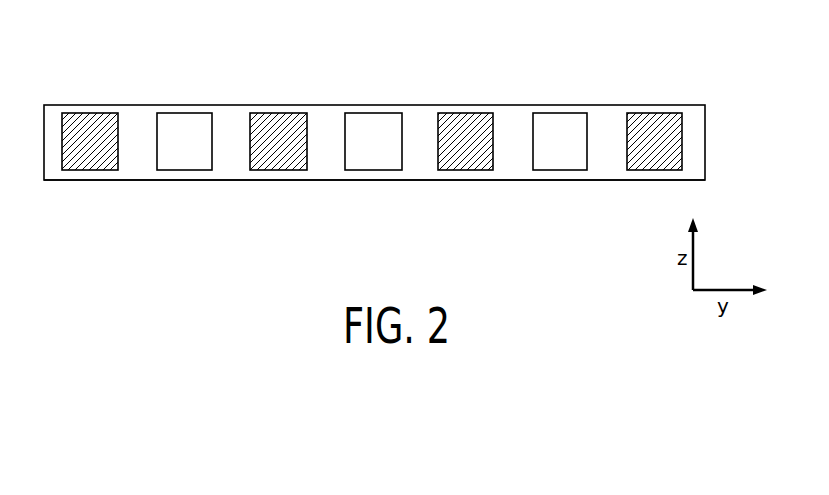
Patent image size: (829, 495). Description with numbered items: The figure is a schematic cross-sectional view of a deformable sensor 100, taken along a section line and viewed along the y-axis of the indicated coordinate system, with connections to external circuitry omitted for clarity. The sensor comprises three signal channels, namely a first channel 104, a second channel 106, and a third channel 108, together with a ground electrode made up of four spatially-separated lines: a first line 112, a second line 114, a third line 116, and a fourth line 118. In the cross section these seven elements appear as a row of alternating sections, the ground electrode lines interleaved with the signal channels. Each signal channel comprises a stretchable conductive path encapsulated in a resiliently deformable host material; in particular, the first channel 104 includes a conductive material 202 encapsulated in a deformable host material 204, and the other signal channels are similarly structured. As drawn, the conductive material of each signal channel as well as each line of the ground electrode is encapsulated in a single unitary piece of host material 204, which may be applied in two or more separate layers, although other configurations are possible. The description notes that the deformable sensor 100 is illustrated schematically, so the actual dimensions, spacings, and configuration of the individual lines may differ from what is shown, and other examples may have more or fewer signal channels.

The deformable sensor 100 is at (603, 58).
The first channel 104 is at (558, 113).
The second channel 106 is at (375, 113).
The third channel 108 is at (185, 113).
The first line 112 is at (657, 113).
The second line 114 is at (462, 113).
The third line 116 is at (282, 113).
The fourth line 118 is at (92, 113).
The conductive material 202 is at (560, 158).
The deformable host material 204 is at (523, 180).